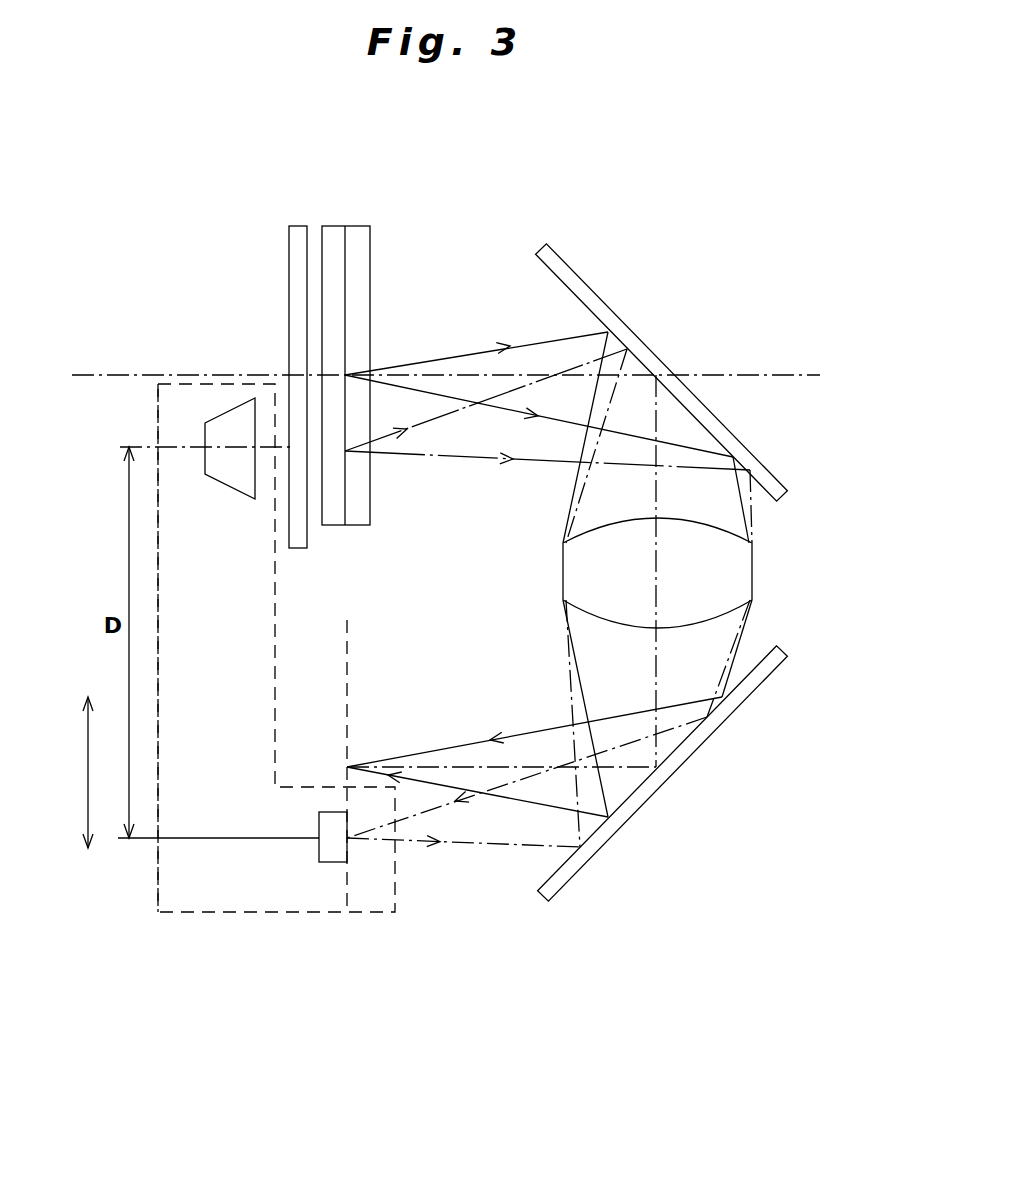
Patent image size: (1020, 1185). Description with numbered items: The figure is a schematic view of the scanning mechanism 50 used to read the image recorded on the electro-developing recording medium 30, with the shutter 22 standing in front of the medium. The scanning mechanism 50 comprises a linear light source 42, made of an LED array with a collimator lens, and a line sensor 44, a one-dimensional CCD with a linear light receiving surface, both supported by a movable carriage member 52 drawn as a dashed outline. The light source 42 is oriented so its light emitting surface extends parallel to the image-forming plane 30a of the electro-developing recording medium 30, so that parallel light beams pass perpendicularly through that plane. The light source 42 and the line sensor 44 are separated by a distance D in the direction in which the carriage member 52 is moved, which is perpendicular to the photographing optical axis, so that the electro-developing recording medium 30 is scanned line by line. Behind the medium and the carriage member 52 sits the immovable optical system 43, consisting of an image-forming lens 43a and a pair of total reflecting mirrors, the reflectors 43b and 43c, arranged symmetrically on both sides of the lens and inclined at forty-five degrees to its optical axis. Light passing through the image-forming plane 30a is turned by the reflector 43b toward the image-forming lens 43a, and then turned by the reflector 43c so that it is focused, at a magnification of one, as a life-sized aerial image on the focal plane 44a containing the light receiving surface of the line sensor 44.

The shutter 22 is at (300, 228).
The electro-developing recording medium 30 is at (333, 226).
The image-forming plane 30a is at (347, 253).
The linear light source 42 is at (230, 412).
The optical system 43 is at (693, 555).
The image-forming lens 43a is at (752, 565).
The reflector 43b is at (578, 285).
The reflector 43c is at (765, 675).
The line sensor 44 is at (332, 862).
The focal plane 44a is at (347, 630).
The scanning mechanism 50 is at (225, 912).
The carriage member 52 is at (157, 870).